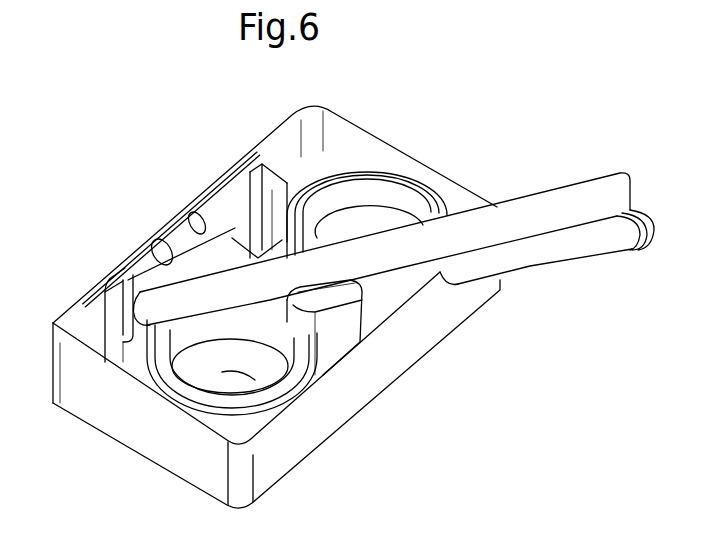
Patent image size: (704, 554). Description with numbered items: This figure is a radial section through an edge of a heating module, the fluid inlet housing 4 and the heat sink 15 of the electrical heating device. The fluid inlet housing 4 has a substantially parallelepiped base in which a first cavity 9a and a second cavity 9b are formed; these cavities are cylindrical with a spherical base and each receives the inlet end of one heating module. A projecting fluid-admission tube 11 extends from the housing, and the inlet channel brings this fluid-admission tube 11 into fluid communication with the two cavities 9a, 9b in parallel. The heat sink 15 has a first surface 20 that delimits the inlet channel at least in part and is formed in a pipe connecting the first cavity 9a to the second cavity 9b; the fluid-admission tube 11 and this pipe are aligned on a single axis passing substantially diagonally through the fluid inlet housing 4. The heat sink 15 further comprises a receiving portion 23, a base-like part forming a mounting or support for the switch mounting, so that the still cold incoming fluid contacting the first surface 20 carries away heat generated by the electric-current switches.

The fluid inlet housing 4 is at (343, 132).
The first cavity 9a is at (377, 235).
The second cavity 9b is at (277, 387).
The fluid-admission tube 11 is at (567, 203).
The heat sink 15 is at (133, 237).
The first surface 20 is at (198, 290).
The receiving portion 23 is at (228, 207).